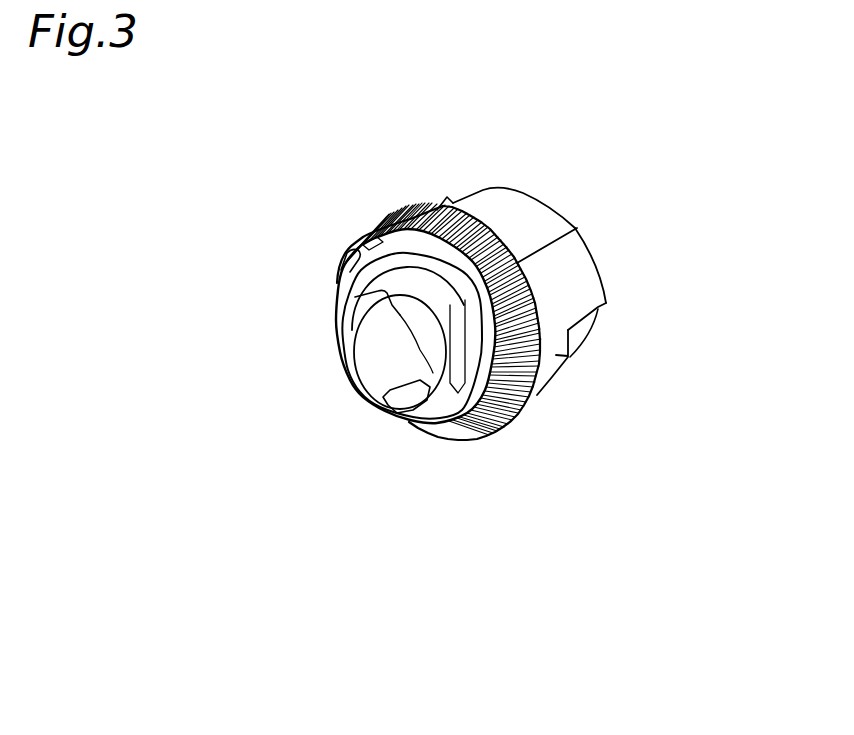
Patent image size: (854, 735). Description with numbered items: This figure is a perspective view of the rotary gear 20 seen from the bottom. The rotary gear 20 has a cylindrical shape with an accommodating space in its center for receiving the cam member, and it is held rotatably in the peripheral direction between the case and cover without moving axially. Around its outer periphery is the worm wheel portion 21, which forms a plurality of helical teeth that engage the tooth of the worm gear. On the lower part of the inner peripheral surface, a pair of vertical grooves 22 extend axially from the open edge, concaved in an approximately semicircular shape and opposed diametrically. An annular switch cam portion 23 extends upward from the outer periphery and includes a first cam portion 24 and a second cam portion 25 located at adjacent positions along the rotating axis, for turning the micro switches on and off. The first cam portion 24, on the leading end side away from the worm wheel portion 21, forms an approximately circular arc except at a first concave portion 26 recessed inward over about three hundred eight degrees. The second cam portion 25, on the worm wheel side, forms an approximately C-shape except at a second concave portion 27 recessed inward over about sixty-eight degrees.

The rotary gear 20 is at (325, 346).
The worm wheel portion 21 is at (522, 418).
The vertical grooves 22 is at (355, 296).
The switch cam portion 23 is at (717, 349).
The first cam portion 24 is at (603, 308).
The second cam portion 25 is at (575, 356).
The first concave portion 26 is at (460, 207).
The second concave portion 27 is at (498, 233).